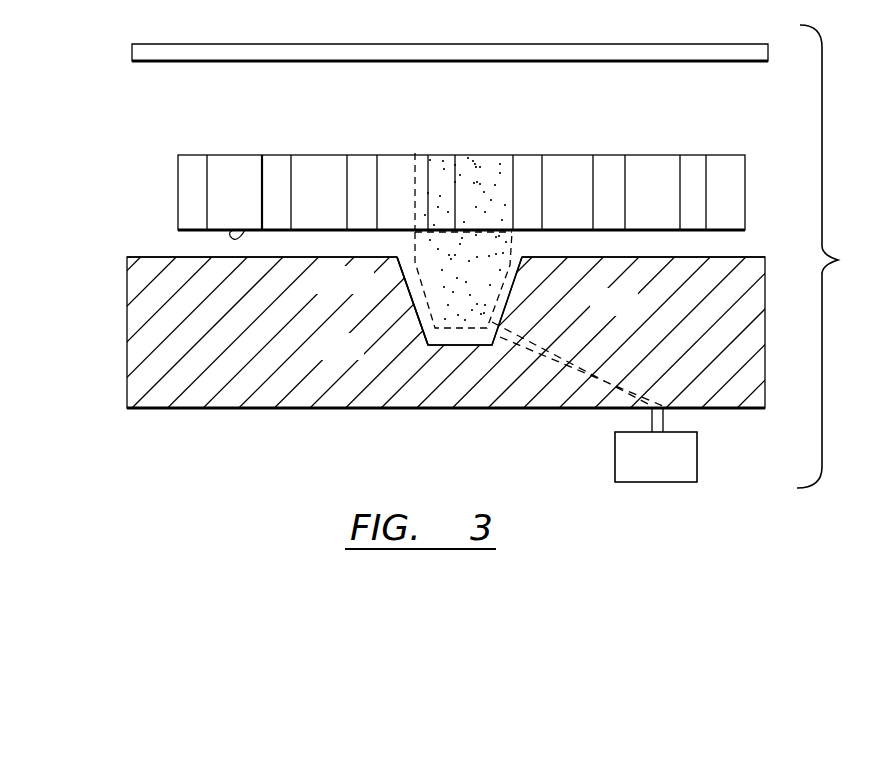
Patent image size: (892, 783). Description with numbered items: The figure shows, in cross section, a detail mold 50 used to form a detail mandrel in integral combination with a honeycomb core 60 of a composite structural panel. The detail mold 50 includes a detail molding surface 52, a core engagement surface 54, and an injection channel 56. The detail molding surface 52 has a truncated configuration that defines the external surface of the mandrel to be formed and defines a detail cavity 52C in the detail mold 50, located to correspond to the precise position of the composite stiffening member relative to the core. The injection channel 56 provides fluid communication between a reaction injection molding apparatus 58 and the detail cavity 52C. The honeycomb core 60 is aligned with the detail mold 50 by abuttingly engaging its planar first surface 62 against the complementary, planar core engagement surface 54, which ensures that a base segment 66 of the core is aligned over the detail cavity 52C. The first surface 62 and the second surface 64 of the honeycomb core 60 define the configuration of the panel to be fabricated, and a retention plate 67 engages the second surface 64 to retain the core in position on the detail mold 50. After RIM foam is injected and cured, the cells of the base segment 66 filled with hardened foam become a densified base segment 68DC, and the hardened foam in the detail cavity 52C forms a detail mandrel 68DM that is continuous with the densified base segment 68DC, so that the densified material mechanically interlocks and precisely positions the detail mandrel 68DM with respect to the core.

The detail mold 50 is at (127, 335).
The detail molding surface 52 is at (418, 308).
The detail cavity 52C is at (409, 283).
The core engagement surface 54 is at (155, 257).
The injection channel 56 is at (562, 343).
The reaction injection molding (RIM) apparatus 58 is at (675, 469).
The honeycomb core 60 is at (178, 187).
The first surface 62 is at (245, 230).
The second surface 64 is at (674, 154).
The base segment 66 is at (512, 108).
The retention plate 67 is at (583, 44).
The densified base segment 68DC is at (473, 177).
The detail mandrel 68DM is at (463, 262).